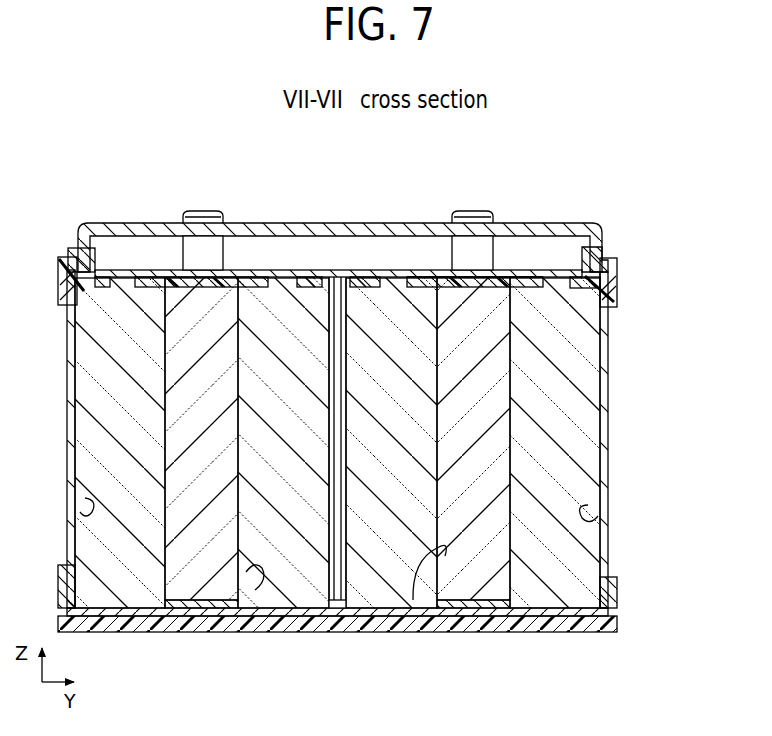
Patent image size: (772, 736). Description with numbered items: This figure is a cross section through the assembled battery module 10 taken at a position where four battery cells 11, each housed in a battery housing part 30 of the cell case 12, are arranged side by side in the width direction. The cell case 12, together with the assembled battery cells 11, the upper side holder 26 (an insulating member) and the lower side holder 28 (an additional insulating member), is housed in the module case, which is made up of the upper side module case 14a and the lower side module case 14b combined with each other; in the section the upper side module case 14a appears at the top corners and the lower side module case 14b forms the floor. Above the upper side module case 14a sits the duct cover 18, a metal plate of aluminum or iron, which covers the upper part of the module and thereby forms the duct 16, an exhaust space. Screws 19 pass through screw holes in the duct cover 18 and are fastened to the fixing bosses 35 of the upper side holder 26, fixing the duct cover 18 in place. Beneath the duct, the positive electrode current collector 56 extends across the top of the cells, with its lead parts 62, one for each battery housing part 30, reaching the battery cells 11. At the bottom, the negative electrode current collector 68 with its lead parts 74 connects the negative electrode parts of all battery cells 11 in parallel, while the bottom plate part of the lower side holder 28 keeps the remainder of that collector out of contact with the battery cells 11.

The battery module 10 is at (606, 218).
The battery cell 11 is at (134, 407).
The cell case 12 is at (610, 396).
The upper side module case 14a is at (610, 250).
The lower side module case 14b is at (622, 624).
The duct 16 is at (345, 250).
The duct cover 18 is at (132, 222).
The screw 19 is at (207, 211).
The upper side holder 26 is at (620, 290).
The lower side holder 28 is at (620, 598).
The battery housing part 30 is at (85, 498).
The fixing boss 35 is at (224, 250).
The positive electrode current collector 56 is at (432, 268).
The lead part 62 is at (290, 276).
The negative electrode current collector 68 is at (338, 632).
The lead part 74 is at (282, 632).